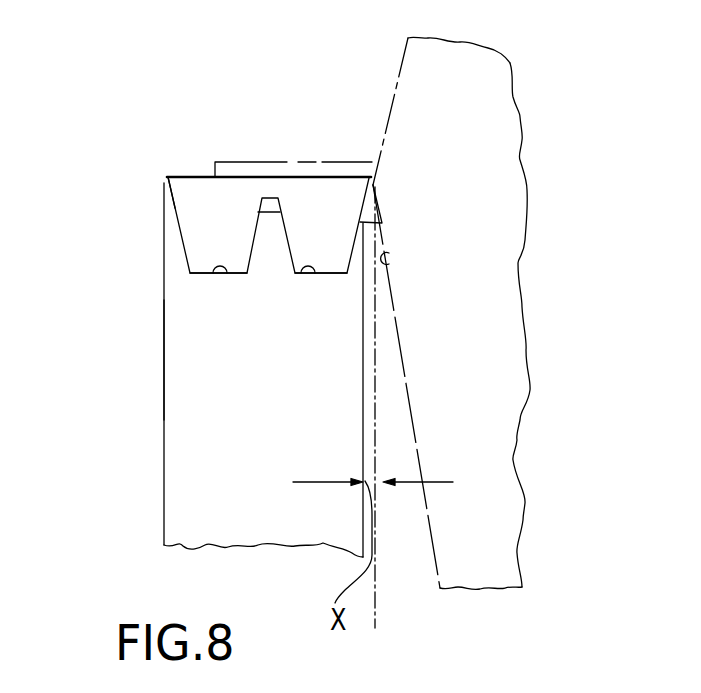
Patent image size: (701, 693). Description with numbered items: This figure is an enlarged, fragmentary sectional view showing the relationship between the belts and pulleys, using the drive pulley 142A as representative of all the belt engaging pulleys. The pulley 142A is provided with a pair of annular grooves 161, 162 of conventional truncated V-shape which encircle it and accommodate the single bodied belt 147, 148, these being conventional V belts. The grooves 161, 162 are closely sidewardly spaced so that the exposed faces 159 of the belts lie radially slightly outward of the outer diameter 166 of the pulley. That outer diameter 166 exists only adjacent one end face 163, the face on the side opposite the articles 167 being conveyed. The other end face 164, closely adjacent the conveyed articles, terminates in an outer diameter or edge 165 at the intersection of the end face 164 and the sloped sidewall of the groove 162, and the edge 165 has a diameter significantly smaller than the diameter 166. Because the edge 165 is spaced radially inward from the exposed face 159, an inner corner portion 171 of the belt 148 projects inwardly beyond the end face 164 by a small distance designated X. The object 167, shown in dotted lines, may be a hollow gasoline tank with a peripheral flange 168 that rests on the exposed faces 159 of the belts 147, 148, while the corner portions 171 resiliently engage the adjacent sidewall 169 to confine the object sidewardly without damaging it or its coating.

The drive pulley 142A is at (233, 467).
The belt 147 is at (222, 203).
The belt 148 is at (335, 195).
The exposed face 159 is at (188, 177).
The annular groove 161 is at (225, 275).
The annular groove 162 is at (313, 275).
The end face 163 is at (164, 433).
The end face 164 is at (358, 466).
The outer diameter or edge 165 is at (382, 222).
The outer diameter 166 is at (163, 188).
The object 167 is at (513, 515).
The peripheral flange 168 is at (297, 168).
The sidewall 169 is at (390, 266).
The inner corner portion 171 is at (357, 192).